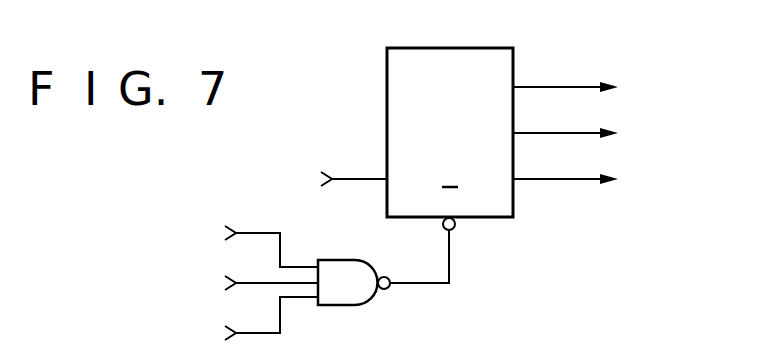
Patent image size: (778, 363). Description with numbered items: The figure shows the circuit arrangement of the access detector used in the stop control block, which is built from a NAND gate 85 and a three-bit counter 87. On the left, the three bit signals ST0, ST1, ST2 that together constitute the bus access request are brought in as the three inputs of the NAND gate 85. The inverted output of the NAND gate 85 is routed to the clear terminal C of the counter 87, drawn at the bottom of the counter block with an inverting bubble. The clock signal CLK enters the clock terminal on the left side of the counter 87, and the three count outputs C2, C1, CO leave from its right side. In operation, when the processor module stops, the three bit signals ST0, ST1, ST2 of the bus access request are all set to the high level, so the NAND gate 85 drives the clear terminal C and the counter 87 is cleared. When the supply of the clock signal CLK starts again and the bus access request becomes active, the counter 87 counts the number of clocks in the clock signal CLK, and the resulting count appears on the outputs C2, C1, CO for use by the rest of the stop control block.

The counter 87 is at (460, 135).
The NAND gate 85 is at (307, 288).
The clock signal CLK is at (323, 180).
The clear terminal C is at (450, 208).
The counter output C2 is at (585, 90).
The counter output C1 is at (585, 135).
The counter output C0 CO is at (587, 181).
The bus access request signal ST0 is at (241, 243).
The bus access request signal ST1 is at (241, 284).
The bus access request signal ST2 is at (241, 323).